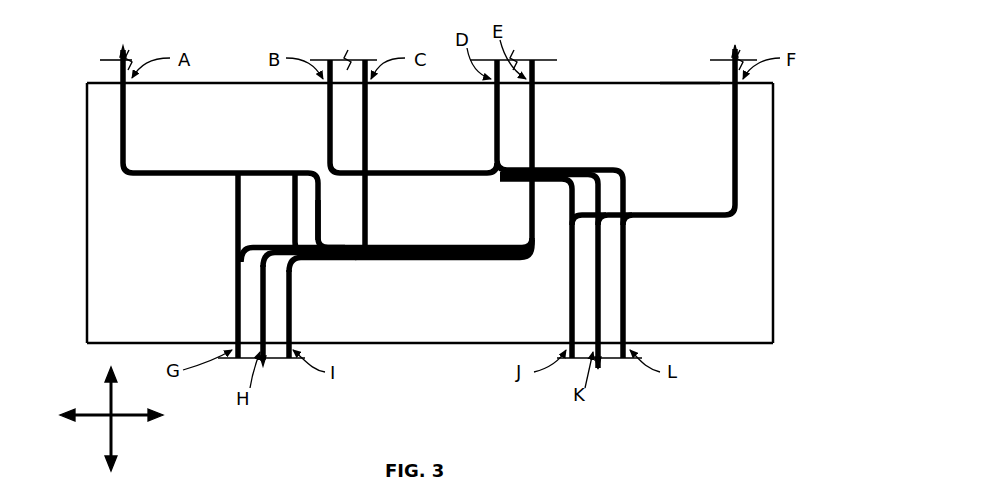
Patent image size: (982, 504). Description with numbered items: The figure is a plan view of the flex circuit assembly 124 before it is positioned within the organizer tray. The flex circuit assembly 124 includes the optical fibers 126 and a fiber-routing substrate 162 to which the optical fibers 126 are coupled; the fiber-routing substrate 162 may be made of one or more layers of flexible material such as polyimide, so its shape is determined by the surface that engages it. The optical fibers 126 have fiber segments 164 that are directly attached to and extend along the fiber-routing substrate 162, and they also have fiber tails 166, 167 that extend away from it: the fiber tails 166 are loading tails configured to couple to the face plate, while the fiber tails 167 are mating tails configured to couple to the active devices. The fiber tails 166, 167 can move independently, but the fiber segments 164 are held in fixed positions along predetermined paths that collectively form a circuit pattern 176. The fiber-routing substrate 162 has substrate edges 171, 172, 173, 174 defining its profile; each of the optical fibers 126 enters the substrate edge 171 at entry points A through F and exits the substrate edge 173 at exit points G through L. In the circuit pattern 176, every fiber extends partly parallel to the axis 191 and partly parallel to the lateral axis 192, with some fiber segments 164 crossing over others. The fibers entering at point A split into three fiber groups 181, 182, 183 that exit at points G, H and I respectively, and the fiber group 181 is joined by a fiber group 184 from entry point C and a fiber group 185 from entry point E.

The flex circuit assembly 124 is at (742, 44).
The optical fibers 126 is at (544, 72).
The fiber-routing substrate 162 is at (633, 82).
The fiber segments 164 is at (130, 135).
The fiber tails 166 is at (118, 72).
The fiber tails 167 is at (234, 359).
The substrate edge 171 is at (687, 81).
The substrate edge 172 is at (777, 207).
The substrate edge 173 is at (446, 347).
The substrate edge 174 is at (84, 262).
The circuit pattern 176 is at (571, 155).
The fiber group 181 is at (235, 238).
The fiber group 182 is at (292, 233).
The fiber group 183 is at (316, 216).
The fiber group 184 is at (359, 122).
The fiber group 185 is at (527, 122).
The axis 191 is at (110, 398).
The lateral axis 192 is at (125, 416).